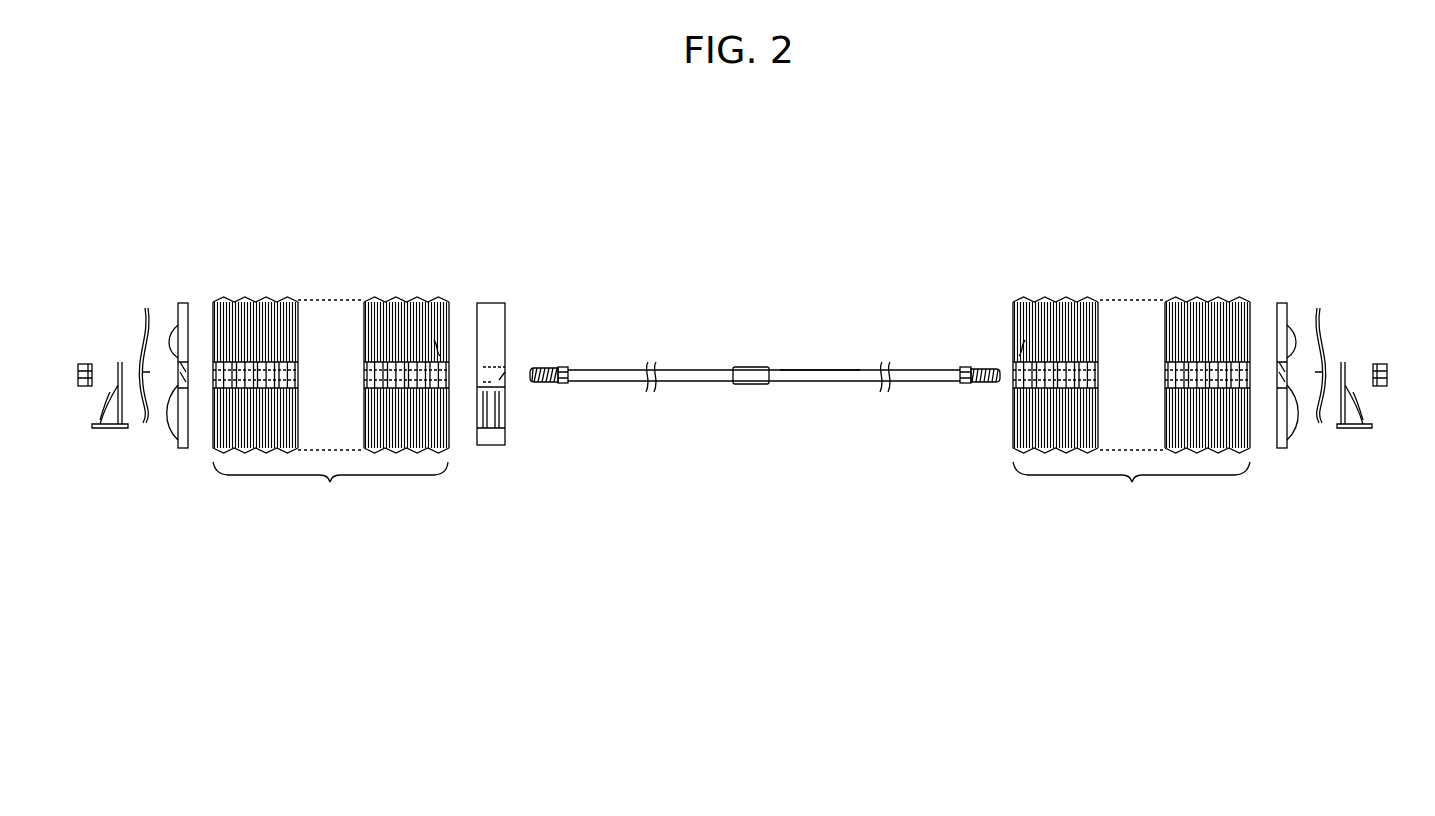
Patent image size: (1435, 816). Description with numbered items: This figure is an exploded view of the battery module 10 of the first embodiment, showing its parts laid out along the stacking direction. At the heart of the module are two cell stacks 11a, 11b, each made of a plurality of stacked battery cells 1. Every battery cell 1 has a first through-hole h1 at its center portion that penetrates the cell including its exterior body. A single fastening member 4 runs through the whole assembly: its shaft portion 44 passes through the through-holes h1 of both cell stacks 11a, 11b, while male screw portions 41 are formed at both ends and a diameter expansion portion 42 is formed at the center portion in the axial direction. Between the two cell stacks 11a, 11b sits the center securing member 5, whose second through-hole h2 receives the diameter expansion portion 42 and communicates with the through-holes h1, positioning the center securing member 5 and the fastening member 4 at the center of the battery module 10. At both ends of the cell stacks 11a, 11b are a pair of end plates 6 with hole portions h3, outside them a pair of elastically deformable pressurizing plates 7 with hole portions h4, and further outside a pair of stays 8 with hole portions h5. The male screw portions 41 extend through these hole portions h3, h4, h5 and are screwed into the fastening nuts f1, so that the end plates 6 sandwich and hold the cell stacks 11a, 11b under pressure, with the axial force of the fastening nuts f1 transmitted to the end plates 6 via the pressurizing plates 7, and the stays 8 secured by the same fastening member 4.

The battery module 10 is at (867, 150).
The battery cell 1 is at (406, 283).
The cell stack 11a is at (330, 487).
The cell stack 11b is at (1131, 487).
The fastening member 4 is at (686, 354).
The male screw portion 41 is at (546, 367).
The diameter expansion portion 42 is at (750, 367).
The shaft portion 44 is at (823, 370).
The center securing member 5 is at (490, 448).
The end plate 6 is at (183, 303).
The pressurizing plate 7 is at (143, 340).
The stay 8 is at (107, 432).
The first through-hole h1 is at (440, 348).
The second through-hole h2 is at (504, 377).
The hole portion h3 is at (172, 408).
The hole portion h4 is at (145, 372).
The hole portion h5 is at (113, 385).
The fastening nut f1 is at (82, 368).